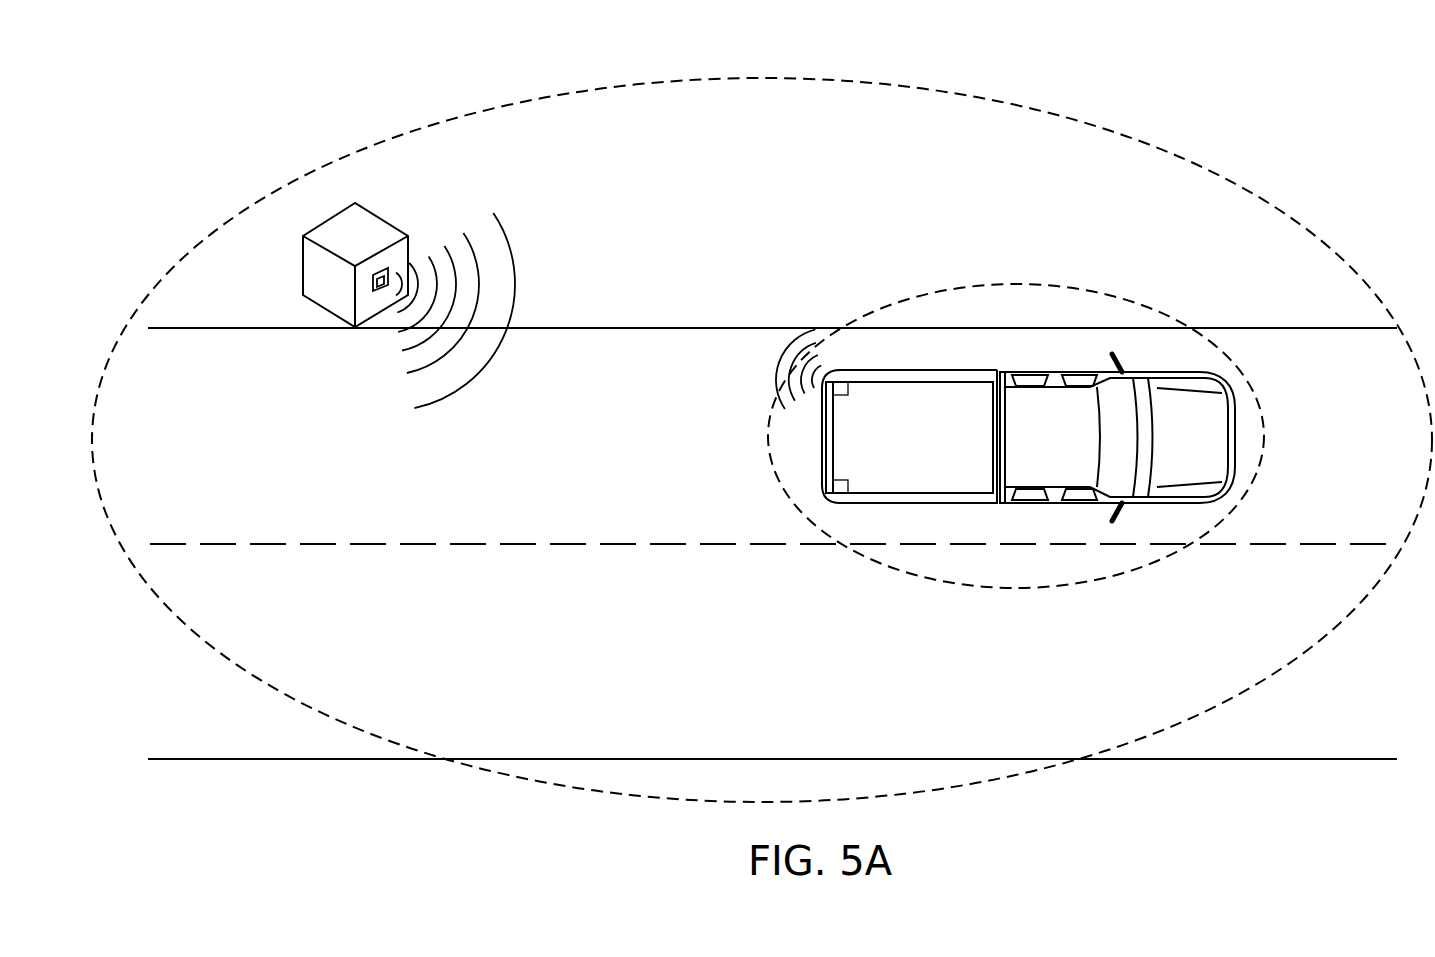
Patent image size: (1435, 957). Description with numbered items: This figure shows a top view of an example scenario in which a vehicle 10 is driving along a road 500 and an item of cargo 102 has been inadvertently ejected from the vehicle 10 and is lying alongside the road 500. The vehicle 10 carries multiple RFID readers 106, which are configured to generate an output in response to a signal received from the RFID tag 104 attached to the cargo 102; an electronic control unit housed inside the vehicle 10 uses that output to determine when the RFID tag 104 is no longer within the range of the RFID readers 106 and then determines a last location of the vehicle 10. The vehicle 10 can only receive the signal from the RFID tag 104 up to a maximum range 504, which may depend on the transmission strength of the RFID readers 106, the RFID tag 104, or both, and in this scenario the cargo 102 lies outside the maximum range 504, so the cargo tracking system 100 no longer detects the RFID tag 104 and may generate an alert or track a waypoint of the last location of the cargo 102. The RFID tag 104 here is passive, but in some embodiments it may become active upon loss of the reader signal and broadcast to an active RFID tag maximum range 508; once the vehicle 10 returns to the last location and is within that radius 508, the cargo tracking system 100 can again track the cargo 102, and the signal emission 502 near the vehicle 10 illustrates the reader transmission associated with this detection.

The road 500 is at (196, 121).
The active RFID tag maximum range 508 is at (198, 248).
The cargo 102 is at (378, 227).
The RFID tag 104 is at (378, 288).
The maximum range 504 is at (769, 430).
The cargo tracking system 100 is at (968, 282).
The vehicle 10 is at (1124, 318).
The RFID readers 106 is at (848, 392).
The sensor signal 502 is at (792, 346).